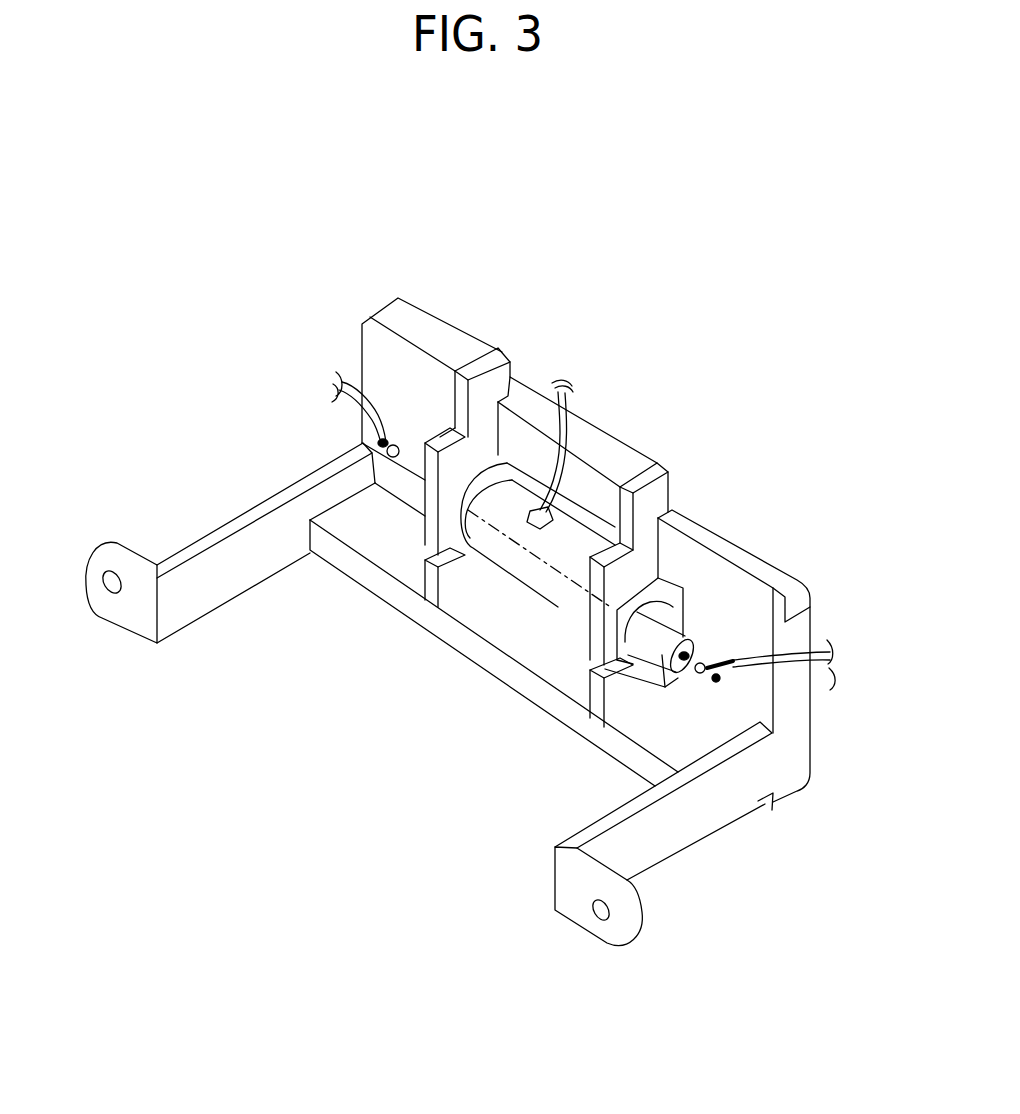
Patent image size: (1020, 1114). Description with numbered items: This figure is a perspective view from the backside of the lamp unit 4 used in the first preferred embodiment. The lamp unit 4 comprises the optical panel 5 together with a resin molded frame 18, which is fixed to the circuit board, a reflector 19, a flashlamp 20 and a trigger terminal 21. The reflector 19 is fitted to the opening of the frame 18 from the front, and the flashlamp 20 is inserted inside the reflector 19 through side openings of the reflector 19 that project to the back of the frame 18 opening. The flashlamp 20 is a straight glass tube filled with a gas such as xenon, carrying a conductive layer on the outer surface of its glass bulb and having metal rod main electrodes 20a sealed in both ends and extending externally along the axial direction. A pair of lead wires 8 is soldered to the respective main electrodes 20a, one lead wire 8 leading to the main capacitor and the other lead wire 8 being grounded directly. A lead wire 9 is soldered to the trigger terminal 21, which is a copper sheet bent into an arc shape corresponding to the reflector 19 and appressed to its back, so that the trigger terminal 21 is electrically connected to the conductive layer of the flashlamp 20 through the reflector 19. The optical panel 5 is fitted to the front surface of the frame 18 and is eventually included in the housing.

The lamp unit 4 is at (530, 214).
The optical panel 5 is at (792, 583).
The lead wires 8 is at (343, 378).
The lead wire 9 is at (563, 393).
The resin molded frame 18 is at (427, 347).
The reflector 19 is at (667, 580).
The flashlamp 20 is at (660, 644).
The main electrodes 20a is at (365, 426).
The trigger terminal 21 is at (548, 575).